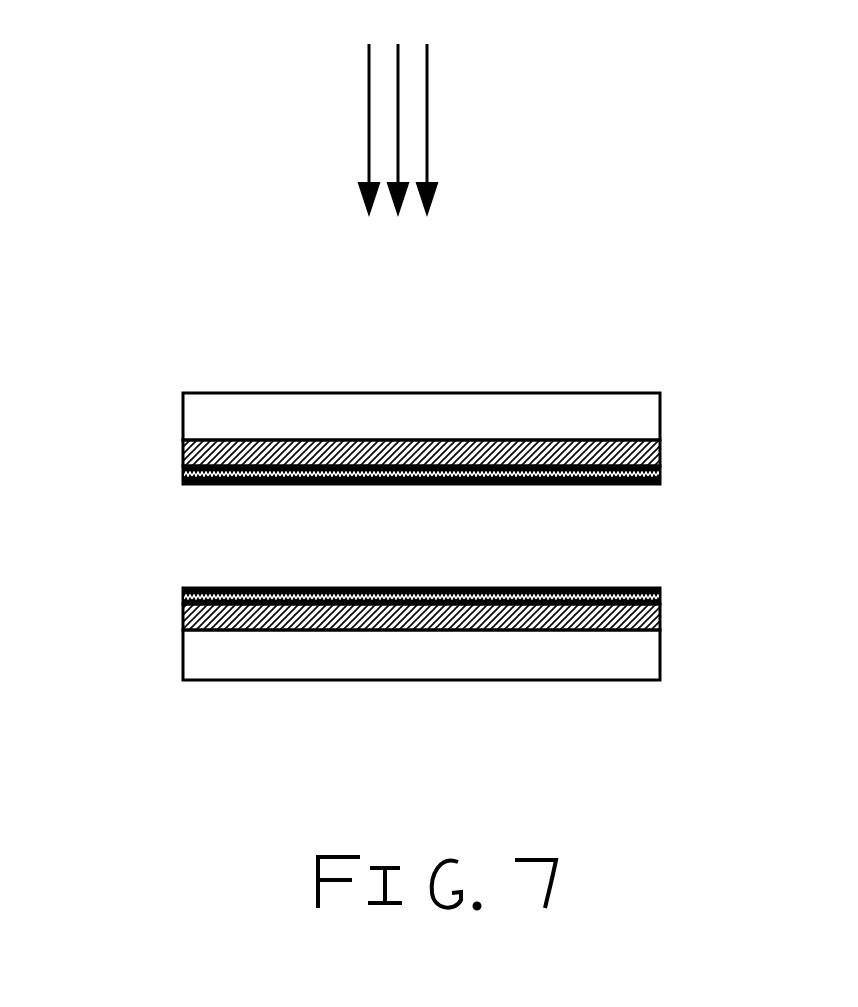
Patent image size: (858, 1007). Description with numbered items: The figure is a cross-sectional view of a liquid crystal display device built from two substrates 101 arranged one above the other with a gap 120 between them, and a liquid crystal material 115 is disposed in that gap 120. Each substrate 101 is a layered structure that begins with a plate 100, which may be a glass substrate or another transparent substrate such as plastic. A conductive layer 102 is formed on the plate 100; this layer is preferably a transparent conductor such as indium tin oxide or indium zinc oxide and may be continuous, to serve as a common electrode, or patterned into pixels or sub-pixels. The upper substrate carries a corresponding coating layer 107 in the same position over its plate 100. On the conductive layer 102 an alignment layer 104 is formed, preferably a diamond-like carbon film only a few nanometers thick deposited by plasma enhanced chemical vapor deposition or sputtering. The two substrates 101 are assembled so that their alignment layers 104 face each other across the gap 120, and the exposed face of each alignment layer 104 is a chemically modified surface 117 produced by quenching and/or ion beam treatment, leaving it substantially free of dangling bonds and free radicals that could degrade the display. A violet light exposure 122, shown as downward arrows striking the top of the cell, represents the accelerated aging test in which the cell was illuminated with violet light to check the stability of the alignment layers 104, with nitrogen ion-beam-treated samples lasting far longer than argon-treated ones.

The plate 100 is at (662, 401).
The substrate 101 is at (446, 518).
The conductive layer 102 is at (663, 613).
The alignment layer 104 is at (660, 471).
The coating layer 107 is at (662, 452).
The liquid crystal material 115 is at (442, 554).
The chemically modified surface 117 is at (650, 487).
The gap 120 is at (200, 536).
The violet light exposure 122 is at (453, 115).